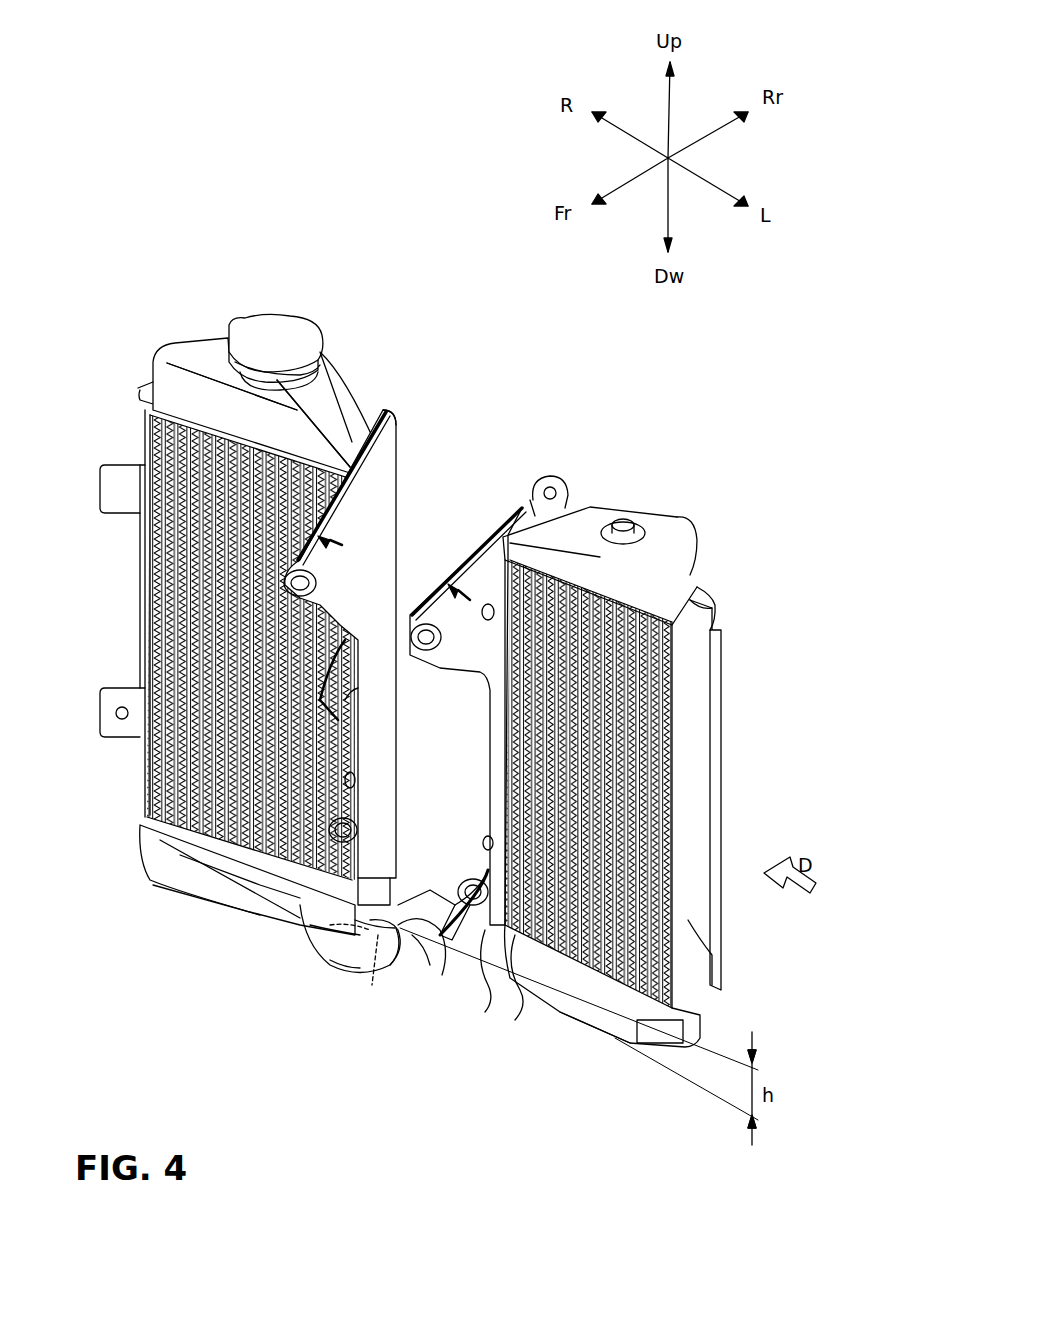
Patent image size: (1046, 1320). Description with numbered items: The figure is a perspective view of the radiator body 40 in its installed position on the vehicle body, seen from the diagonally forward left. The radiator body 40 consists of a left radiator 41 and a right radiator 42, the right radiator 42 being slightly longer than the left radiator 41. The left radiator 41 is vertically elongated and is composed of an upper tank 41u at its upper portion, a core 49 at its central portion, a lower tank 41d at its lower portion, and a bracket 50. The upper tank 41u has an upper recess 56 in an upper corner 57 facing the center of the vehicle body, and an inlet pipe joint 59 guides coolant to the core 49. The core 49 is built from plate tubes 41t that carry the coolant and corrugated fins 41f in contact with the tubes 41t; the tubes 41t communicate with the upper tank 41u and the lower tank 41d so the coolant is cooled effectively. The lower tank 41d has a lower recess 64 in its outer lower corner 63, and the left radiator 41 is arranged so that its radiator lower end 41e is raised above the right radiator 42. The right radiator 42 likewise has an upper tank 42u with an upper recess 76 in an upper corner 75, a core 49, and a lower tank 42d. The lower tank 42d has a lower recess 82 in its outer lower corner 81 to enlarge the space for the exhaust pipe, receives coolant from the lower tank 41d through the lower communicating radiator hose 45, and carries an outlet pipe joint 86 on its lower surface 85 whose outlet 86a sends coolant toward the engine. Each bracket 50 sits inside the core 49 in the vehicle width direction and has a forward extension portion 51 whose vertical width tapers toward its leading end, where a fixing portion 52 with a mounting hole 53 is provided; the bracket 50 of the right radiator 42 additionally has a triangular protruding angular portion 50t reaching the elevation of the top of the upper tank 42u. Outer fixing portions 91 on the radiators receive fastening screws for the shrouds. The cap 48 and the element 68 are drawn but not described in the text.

The radiator body 40 is at (425, 215).
The left radiator 41 is at (700, 545).
The upper tank 41u is at (680, 600).
The lower tank 41d is at (625, 1035).
The plate tubes 41t is at (205, 875).
The radiator lower end 41e is at (592, 1030).
The fins 41f is at (270, 903).
The right radiator 42 is at (195, 340).
The upper tank 42u is at (165, 352).
The lower tank 42d is at (240, 940).
The lower communicating radiator hose 45 is at (432, 888).
The radiator cap 48 is at (275, 335).
The core 49 is at (660, 1112).
The bracket 50 is at (466, 747).
The protruding angular portion 50t is at (388, 412).
The extension portion 51 is at (312, 572).
The fixing portion 52 is at (390, 590).
The mounting hole 53 is at (406, 622).
The upper recess 56 is at (578, 530).
The upper corner 57 is at (548, 486).
The inlet pipe joint 59 is at (660, 520).
The outer lower corner 63 is at (497, 940).
The lower recess 64 is at (522, 945).
The hose 68 is at (360, 920).
The upper corner 75 is at (355, 440).
The upper recess 76 is at (325, 440).
The outer lower corner 81 is at (140, 828).
The lower recess 82 is at (170, 860).
The lower surface 85 is at (320, 930).
The outlet pipe joint 86 is at (348, 977).
The outlet 86a is at (375, 975).
The outer fixing portions 91 is at (105, 715).